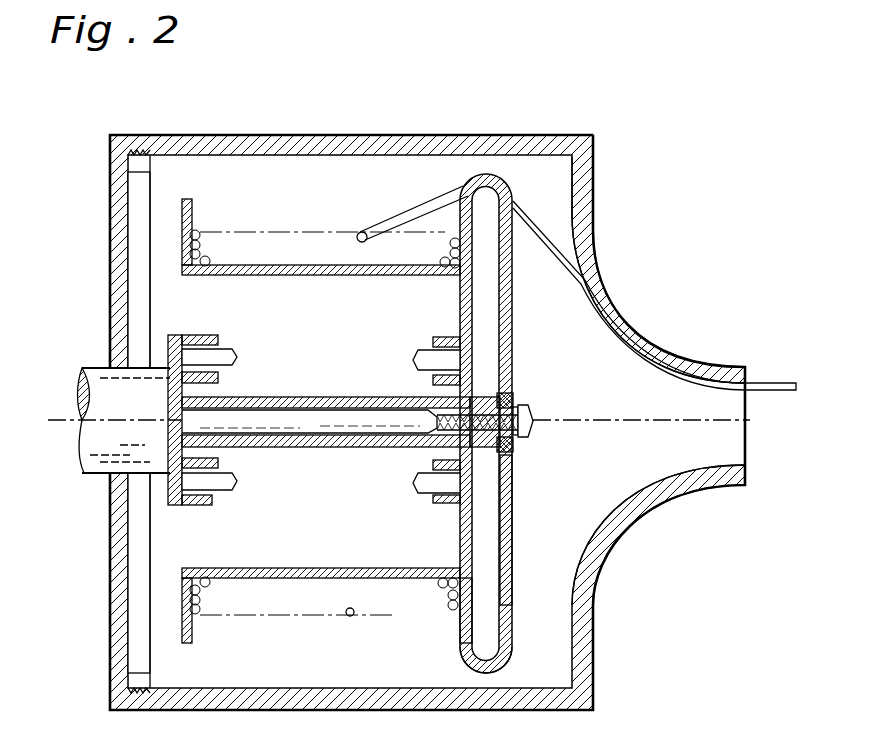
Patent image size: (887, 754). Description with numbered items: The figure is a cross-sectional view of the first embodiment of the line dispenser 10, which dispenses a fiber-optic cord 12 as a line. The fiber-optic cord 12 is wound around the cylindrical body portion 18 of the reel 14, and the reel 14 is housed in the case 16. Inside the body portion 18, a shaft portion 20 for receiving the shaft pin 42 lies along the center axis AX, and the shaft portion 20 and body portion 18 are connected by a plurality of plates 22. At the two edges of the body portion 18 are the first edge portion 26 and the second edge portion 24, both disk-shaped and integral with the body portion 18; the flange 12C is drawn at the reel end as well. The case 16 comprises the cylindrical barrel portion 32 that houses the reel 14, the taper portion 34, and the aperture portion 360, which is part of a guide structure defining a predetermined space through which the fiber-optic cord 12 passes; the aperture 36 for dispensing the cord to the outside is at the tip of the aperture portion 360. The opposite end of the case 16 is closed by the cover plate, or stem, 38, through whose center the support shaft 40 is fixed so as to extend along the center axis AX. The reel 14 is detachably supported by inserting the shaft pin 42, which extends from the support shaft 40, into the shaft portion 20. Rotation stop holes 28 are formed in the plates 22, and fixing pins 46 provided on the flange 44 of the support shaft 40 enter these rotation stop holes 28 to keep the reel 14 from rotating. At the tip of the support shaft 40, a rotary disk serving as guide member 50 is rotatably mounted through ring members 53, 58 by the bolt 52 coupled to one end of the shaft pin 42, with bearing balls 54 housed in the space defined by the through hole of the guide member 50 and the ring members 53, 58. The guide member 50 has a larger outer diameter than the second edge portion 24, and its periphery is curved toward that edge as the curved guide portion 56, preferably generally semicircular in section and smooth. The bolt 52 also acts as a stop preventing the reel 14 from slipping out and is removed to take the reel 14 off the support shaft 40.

The line dispenser 10 is at (630, 225).
The fiber-optic cord 12 is at (772, 382).
The rotor flange 12C is at (197, 234).
The reel 14 is at (293, 210).
The case 16 is at (596, 172).
The body portion 18 is at (320, 274).
The shaft portion 20 is at (335, 400).
The plates 22 is at (450, 300).
The second edge portion 24 is at (470, 618).
The first edge portion 26 is at (191, 628).
The rotation stop holes 28 is at (227, 336).
The barrel portion 32 is at (316, 134).
The taper portion 34 is at (616, 320).
The aperture 36 is at (708, 458).
The cover plate (stem) 38 is at (118, 552).
The support shaft 40 is at (97, 366).
The shaft pin 42 is at (342, 433).
The flange 44 is at (172, 350).
The fixing pins 46 is at (233, 365).
The rotary disk (guide member) 50 is at (508, 488).
The bolt 52 is at (534, 419).
The ring member 53 is at (515, 446).
The bearing balls 54 is at (506, 394).
The curved portion (guide portion) 56 is at (460, 660).
The ring member 58 is at (482, 398).
The aperture portion 360 is at (722, 372).
The center axis AX is at (62, 423).